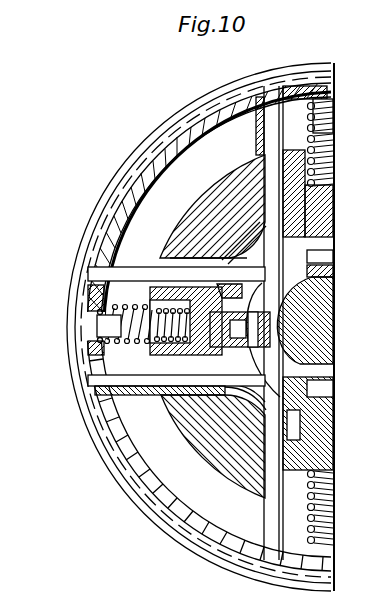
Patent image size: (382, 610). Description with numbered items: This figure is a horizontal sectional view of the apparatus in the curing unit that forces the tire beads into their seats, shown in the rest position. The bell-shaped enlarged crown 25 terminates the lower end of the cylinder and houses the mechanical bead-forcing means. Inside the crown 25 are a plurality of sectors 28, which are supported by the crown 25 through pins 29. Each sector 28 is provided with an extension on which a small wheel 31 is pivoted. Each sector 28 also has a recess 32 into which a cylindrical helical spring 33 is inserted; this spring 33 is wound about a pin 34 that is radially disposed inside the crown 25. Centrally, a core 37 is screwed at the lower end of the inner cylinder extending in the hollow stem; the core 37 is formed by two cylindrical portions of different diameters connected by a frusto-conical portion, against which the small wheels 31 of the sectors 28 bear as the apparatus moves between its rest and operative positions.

The bell-shaped enlarged crown 25 is at (201, 206).
The sectors 28 is at (203, 447).
The pins 29 is at (131, 277).
The small wheel 31 is at (272, 326).
The recess 32 is at (212, 315).
The cylindrical helical spring 33 is at (146, 331).
The pin 34 is at (104, 326).
The core 37 is at (284, 363).